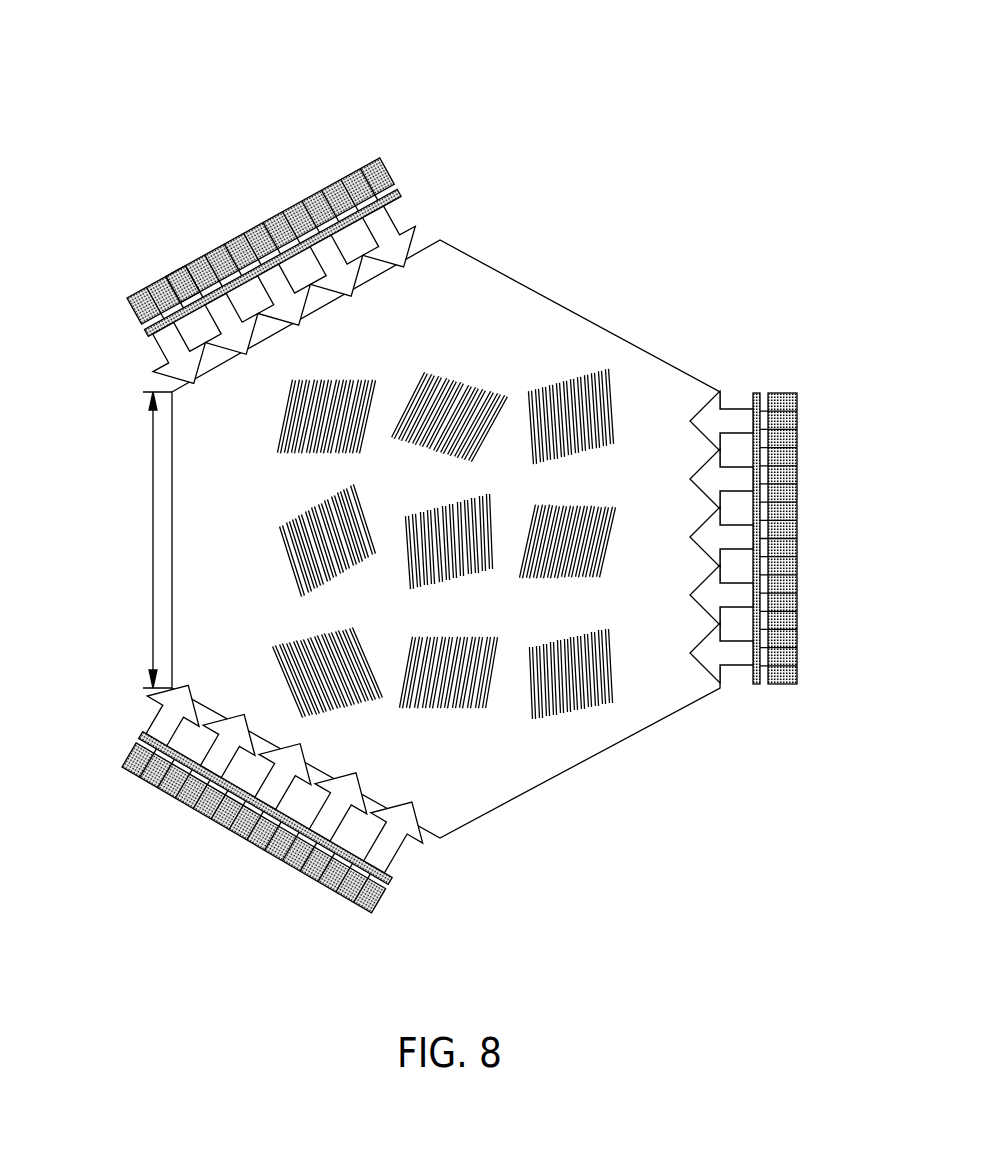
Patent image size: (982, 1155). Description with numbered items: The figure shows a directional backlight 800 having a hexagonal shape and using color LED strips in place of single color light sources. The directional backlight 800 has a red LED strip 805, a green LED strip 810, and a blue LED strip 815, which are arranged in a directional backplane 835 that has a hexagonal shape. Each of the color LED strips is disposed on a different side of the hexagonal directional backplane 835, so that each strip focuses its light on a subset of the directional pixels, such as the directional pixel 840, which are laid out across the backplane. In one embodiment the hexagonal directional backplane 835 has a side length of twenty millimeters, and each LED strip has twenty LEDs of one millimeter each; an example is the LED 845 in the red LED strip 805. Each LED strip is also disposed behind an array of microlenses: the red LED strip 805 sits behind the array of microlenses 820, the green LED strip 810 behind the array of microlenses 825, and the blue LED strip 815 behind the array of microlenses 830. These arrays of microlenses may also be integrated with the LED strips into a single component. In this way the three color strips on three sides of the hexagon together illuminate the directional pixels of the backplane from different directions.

The directional backlight 800 is at (453, 66).
The red LED strip 805 is at (255, 228).
The green LED strip 810 is at (123, 768).
The blue LED strip 815 is at (797, 422).
The array of microlenses 820 is at (397, 188).
The array of microlenses 825 is at (147, 735).
The array of microlenses 830 is at (758, 393).
The directional backplane 835 is at (510, 307).
The directional pixel 840 is at (595, 373).
The LED 845 is at (182, 283).